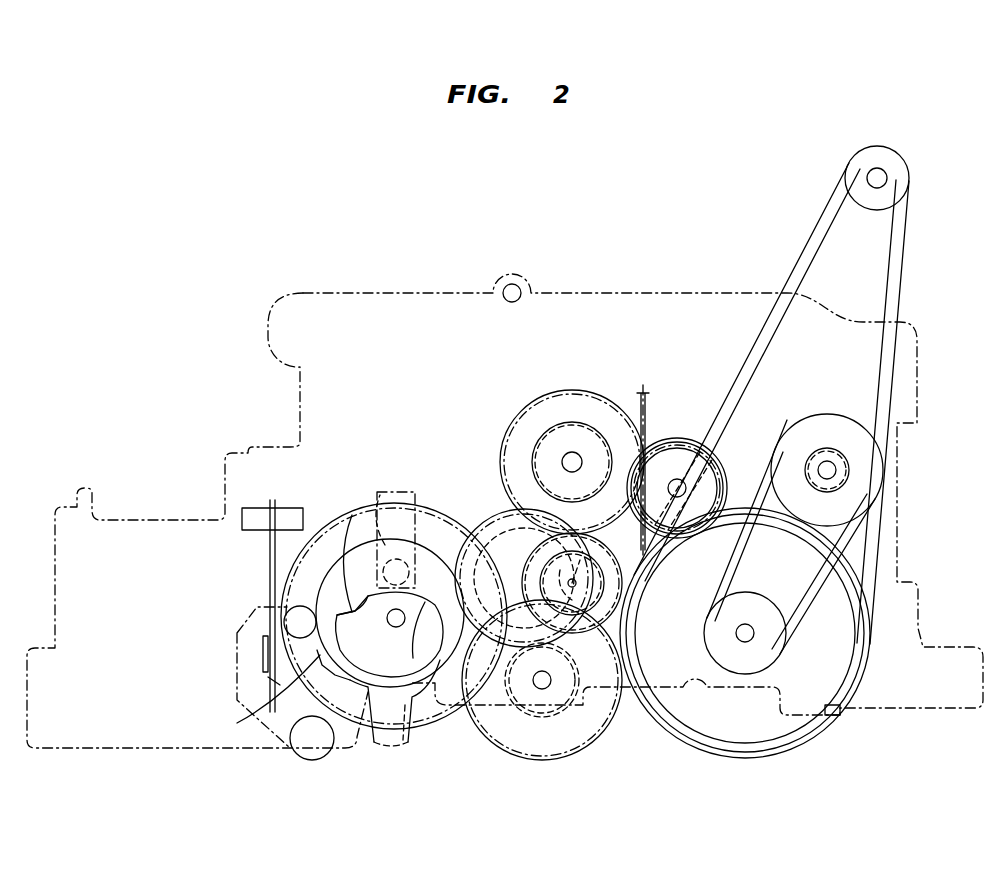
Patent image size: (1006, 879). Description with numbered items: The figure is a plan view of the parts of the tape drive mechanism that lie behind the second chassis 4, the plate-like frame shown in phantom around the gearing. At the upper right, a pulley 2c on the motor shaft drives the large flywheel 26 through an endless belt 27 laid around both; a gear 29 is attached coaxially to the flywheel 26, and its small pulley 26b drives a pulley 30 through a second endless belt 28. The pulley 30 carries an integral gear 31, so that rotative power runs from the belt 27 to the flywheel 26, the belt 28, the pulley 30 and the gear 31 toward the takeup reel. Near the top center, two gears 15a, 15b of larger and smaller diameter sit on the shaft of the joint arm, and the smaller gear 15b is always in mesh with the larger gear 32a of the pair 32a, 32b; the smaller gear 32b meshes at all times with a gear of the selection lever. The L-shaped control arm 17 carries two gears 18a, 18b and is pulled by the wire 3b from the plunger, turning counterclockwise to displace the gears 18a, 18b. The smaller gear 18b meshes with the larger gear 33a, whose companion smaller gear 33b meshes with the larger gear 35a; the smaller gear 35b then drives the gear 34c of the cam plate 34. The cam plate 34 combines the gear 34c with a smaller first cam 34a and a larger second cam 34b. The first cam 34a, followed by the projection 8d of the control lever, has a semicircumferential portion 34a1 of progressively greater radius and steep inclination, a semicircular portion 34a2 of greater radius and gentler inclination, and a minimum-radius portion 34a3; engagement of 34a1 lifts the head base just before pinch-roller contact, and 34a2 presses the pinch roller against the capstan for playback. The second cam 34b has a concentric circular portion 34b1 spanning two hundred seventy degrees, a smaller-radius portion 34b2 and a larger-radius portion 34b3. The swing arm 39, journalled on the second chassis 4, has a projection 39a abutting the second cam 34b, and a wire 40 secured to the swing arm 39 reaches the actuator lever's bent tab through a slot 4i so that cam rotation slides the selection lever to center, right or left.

The pulley 2c is at (898, 173).
The endless belt 27 is at (812, 236).
The larger-diameter gear 32a is at (508, 430).
The smaller-diameter gear 32b is at (562, 422).
The wire 3b is at (643, 392).
The larger-diameter gear 15a is at (712, 466).
The smaller-diameter gear 15b is at (680, 442).
The pulley 30 is at (862, 450).
The gear 31 is at (840, 476).
The endless belt 28 is at (850, 532).
The second chassis 4 is at (922, 630).
The slot 4i is at (218, 520).
The control arm 17 is at (598, 572).
The gear 18a is at (608, 618).
The smaller-diameter gear 18b is at (600, 600).
The cam plate 34 is at (420, 506).
The first cam 34a is at (418, 700).
The semicircumferential portion 34a1 is at (395, 640).
The semicircular portion 34a2 is at (364, 625).
The minimum-radius portion 34a3 is at (352, 515).
The second cam 34b is at (372, 722).
The concentric circular portion 34b1 is at (396, 570).
The smaller-radius portion 34b2 is at (395, 732).
The larger-radius portion 34b3 is at (258, 707).
The gear 34c is at (303, 523).
The projection 8d is at (385, 545).
The larger-diameter gear 35a is at (506, 518).
The smaller-diameter gear 35b is at (495, 538).
The larger-diameter gear 33a is at (522, 760).
The smaller-diameter gear 33b is at (570, 705).
The flywheel 26 is at (842, 705).
The small pulley 26b is at (734, 660).
The gear 29 is at (786, 745).
The swing arm 39 is at (240, 673).
The projection 39a is at (292, 612).
The wire 40 is at (270, 553).